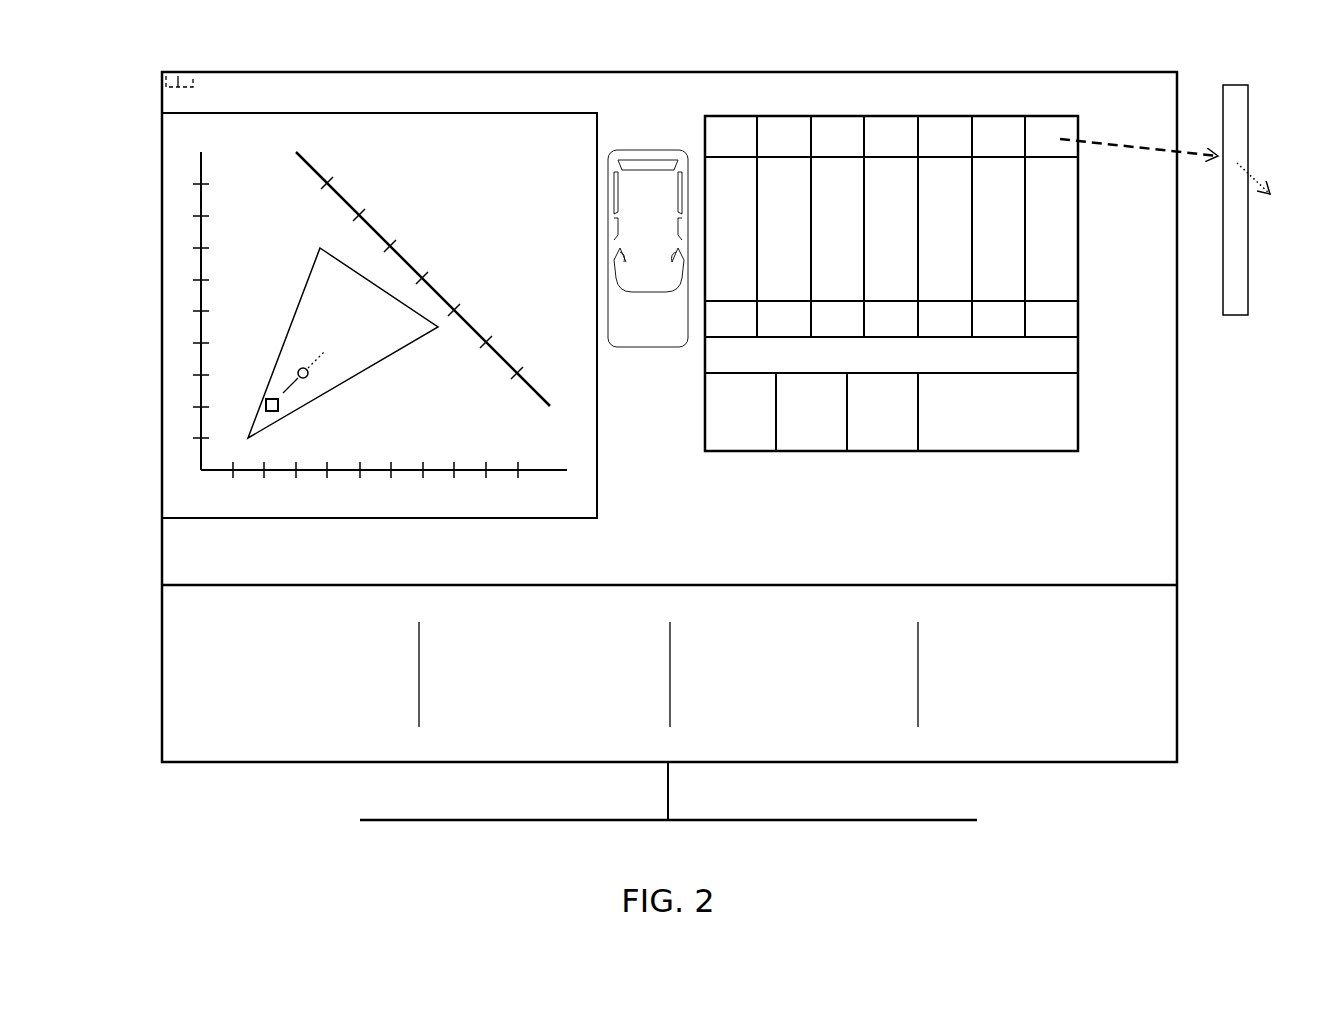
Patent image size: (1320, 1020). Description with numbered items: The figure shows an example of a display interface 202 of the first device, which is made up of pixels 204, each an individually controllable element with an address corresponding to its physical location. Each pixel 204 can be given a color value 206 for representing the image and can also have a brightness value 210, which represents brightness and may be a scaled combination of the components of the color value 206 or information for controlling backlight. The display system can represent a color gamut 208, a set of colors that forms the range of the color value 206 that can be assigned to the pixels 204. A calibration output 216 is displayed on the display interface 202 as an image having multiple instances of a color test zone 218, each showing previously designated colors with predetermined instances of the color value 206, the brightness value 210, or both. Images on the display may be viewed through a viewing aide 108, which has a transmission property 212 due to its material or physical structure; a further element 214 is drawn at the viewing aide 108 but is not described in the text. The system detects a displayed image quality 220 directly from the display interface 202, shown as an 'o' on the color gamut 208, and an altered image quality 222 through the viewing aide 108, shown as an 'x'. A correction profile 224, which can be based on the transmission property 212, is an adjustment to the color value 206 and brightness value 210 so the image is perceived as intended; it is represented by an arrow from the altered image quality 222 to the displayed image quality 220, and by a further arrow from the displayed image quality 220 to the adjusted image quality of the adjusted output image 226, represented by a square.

The display interface 202 is at (312, 93).
The pixels 204 is at (172, 85).
The color gamut 208 is at (442, 143).
The calibration output 216 is at (682, 145).
The color test zone 218 is at (1038, 183).
The viewing aide 108 is at (1235, 100).
The emitted light 214 is at (1263, 165).
The transmission property 212 is at (1263, 212).
The correction profile 224 is at (315, 353).
The displayed image quality 220 is at (467, 633).
The color value 206 is at (467, 660).
The brightness value 210 is at (497, 690).
The altered image quality 222 is at (855, 640).
The adjusted output image 226 is at (1128, 618).